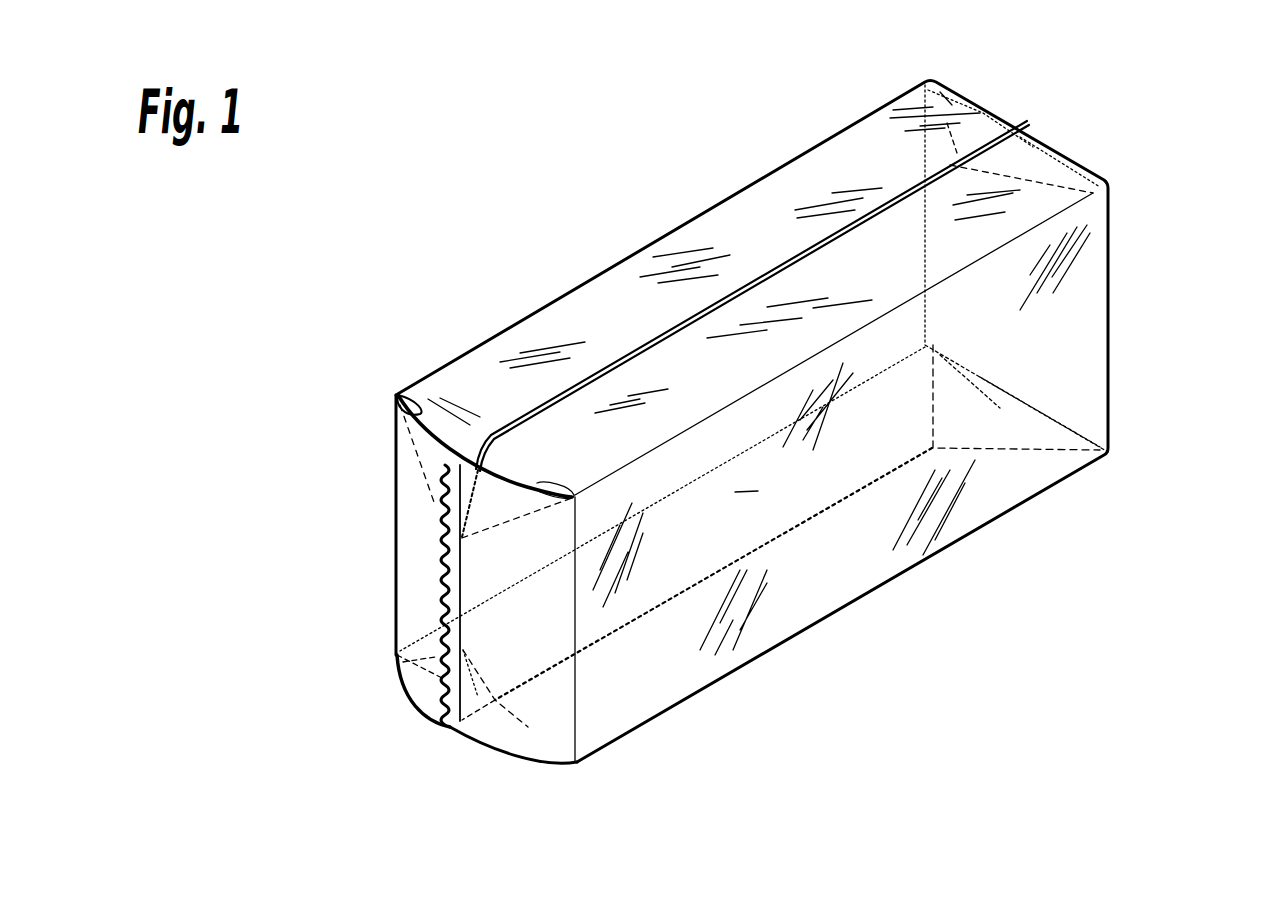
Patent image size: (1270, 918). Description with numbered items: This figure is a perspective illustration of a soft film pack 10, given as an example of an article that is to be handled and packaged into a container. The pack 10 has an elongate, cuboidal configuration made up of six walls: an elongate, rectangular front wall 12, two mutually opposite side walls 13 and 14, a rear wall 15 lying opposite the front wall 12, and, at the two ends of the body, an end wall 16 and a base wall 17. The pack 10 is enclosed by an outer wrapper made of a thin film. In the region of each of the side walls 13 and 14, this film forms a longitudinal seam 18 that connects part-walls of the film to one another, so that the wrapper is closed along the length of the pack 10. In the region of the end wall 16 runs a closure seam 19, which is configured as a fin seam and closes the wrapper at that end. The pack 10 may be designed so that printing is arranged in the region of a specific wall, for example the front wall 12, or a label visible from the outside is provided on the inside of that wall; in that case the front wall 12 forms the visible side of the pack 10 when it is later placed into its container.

The pack 10 is at (715, 152).
The front wall 12 is at (1078, 363).
The side wall 13 is at (885, 133).
The side wall 14 is at (675, 712).
The rear wall 15 is at (547, 300).
The end wall 16 is at (497, 722).
The base wall 17 is at (1108, 248).
The longitudinal seam 18 is at (688, 313).
The closure seam 19 is at (453, 605).